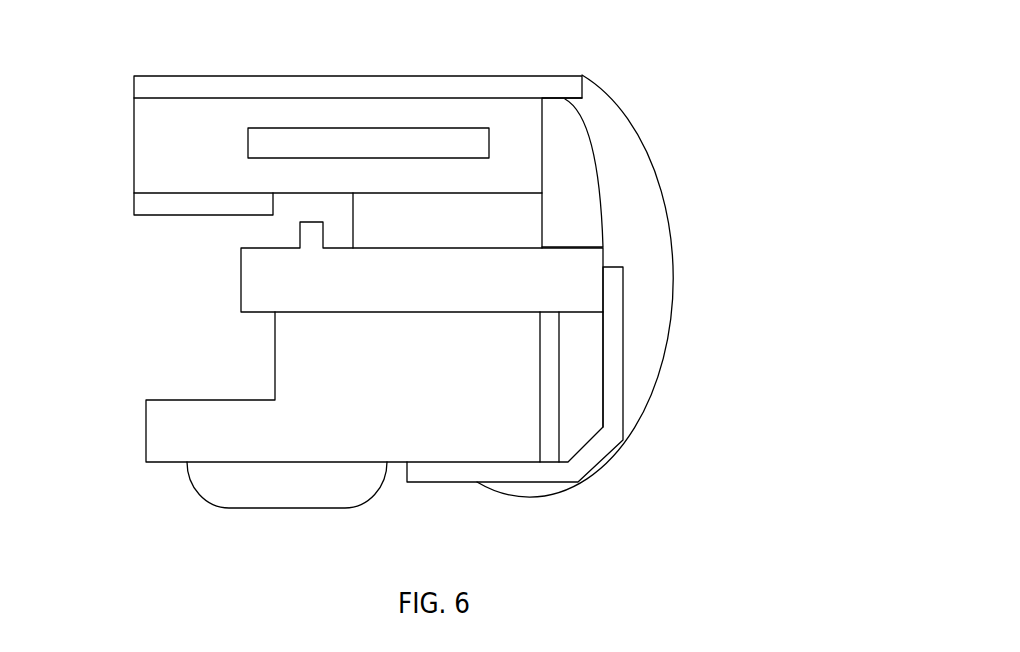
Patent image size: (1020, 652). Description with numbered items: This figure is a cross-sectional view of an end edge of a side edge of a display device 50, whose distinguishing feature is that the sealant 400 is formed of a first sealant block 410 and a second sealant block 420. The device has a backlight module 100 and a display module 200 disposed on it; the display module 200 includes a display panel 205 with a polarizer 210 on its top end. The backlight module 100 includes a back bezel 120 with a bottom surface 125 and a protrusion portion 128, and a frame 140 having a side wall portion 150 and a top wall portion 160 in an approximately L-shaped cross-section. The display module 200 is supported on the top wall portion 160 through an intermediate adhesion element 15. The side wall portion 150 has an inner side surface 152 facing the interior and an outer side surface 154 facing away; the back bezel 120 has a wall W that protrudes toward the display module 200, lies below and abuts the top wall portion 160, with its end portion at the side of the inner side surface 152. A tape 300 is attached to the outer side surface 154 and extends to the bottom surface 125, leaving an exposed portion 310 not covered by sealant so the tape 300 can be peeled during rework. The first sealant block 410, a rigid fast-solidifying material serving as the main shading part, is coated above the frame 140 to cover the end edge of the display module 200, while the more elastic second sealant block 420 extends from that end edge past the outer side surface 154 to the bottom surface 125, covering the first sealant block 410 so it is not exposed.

The display device 50 is at (100, 38).
The display module 200 is at (116, 519).
The display panel 205 is at (218, 159).
The polarizer 210 is at (558, 84).
The intermediate adhesion element 15 is at (453, 235).
The first sealant block 410 is at (593, 186).
The second sealant block 420 is at (653, 186).
The sealant 400 is at (772, 190).
The top wall portion 160 is at (398, 298).
The backlight module 100 is at (85, 367).
The wall W is at (413, 414).
The side wall portion 150 is at (603, 380).
The frame 140 is at (587, 317).
The inner side surface 152 is at (547, 389).
The outer side surface 154 is at (603, 393).
The tape 300 is at (598, 448).
The exposed portion 310 is at (464, 504).
The back bezel 120 is at (267, 450).
The protrusion portion 128 is at (213, 480).
The bottom surface 125 is at (305, 465).